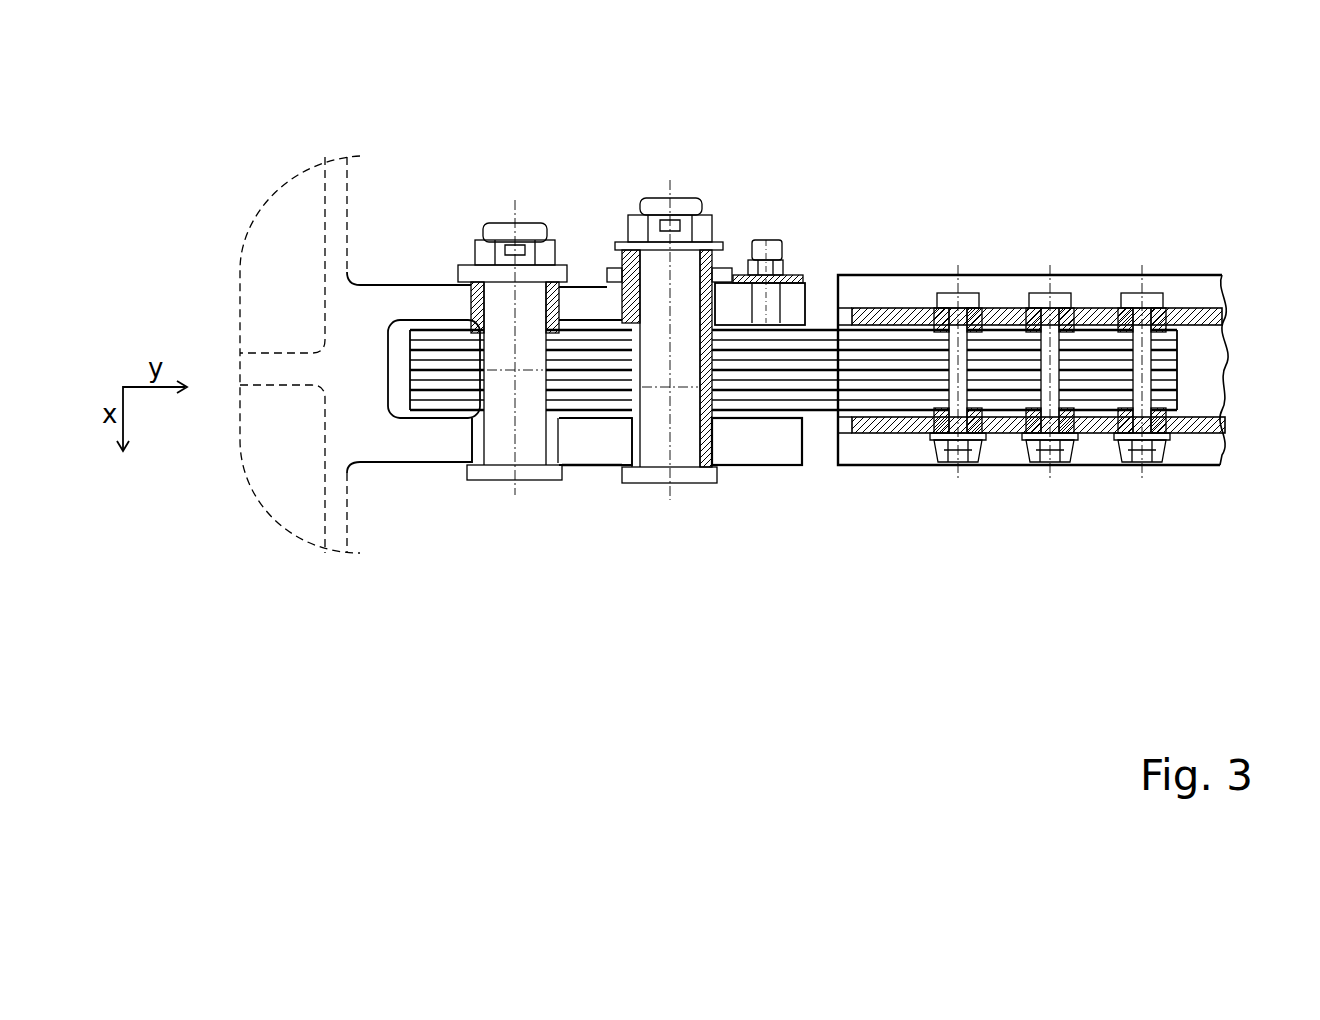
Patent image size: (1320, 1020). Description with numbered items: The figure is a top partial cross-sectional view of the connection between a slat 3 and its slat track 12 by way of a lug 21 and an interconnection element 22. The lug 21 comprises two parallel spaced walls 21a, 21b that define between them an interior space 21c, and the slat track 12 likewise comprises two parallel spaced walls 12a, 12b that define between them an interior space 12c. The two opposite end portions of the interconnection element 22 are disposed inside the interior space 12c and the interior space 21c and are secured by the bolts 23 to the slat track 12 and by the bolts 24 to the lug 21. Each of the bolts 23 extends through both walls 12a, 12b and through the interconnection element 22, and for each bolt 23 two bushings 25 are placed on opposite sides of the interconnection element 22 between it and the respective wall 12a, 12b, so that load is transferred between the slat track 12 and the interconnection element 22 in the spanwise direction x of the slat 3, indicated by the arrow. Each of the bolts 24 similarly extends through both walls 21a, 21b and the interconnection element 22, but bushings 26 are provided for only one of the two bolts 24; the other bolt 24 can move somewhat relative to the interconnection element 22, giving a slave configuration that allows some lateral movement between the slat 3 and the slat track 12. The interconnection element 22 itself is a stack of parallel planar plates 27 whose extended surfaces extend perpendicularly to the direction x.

The slat 3 is at (288, 220).
The slat track 12 is at (1104, 212).
The wall 12a is at (1192, 308).
The wall 12b is at (1192, 427).
The interior space 12c is at (1210, 383).
The lug 21 is at (420, 252).
The wall 21a is at (755, 455).
The wall 21b is at (795, 310).
The interior space 21c is at (422, 410).
The interconnection element 22 is at (815, 400).
The bolts 23 is at (966, 303).
The bolts 24 is at (532, 470).
The bushings 25 is at (943, 323).
The bushings 26 is at (563, 262).
The planar plates 27 is at (815, 340).